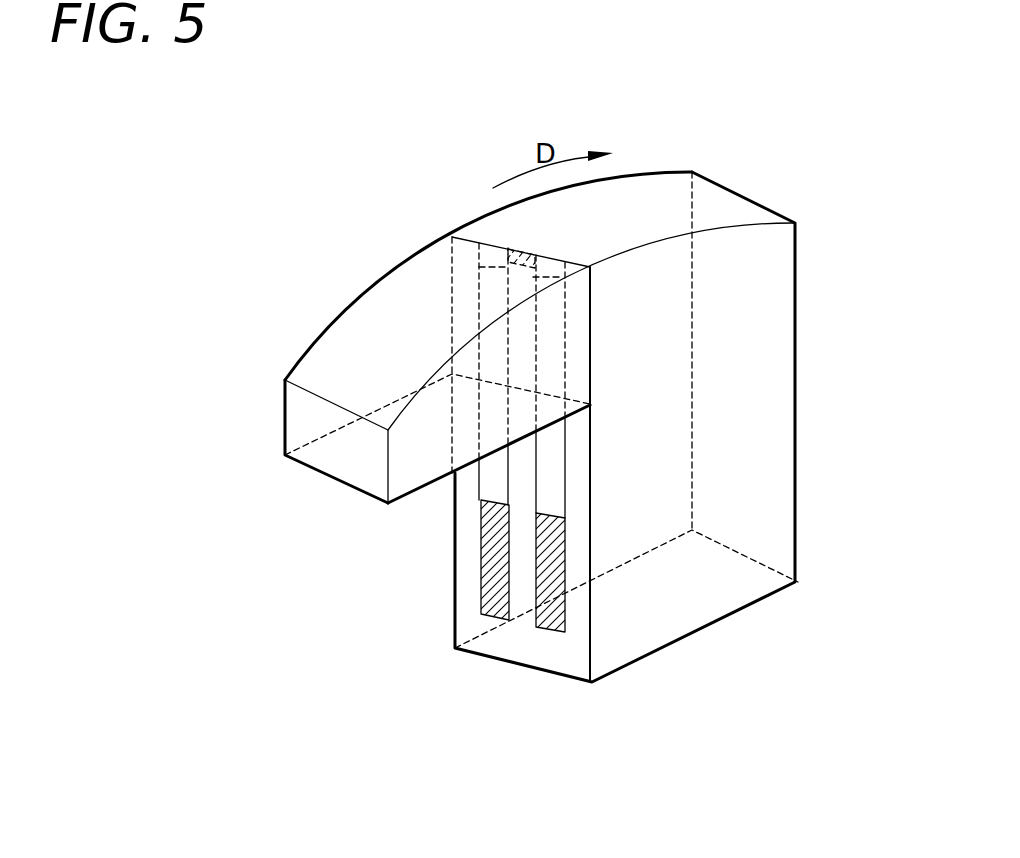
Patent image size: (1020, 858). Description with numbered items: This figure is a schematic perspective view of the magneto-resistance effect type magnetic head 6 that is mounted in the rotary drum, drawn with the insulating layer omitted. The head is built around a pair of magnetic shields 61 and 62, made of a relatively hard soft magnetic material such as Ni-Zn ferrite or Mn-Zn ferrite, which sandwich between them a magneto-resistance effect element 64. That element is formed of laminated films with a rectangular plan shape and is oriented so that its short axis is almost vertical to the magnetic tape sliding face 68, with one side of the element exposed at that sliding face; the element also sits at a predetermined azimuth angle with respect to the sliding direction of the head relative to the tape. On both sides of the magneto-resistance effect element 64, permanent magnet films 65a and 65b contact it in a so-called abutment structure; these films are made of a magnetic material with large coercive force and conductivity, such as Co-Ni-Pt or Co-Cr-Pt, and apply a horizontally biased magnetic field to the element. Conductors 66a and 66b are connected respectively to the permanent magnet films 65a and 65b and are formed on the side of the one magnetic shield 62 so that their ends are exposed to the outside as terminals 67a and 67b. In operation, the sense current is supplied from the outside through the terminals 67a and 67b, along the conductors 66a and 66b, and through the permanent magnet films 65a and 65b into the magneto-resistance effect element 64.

The magneto-resistance effect type magnetic head 6 is at (540, 427).
The magnetic tape sliding face 68 is at (345, 333).
The magnetic shield 61 is at (325, 462).
The magnetic shield 62 is at (688, 623).
The magneto-resistance effect element 64 is at (523, 253).
The permanent magnet film 65a is at (495, 253).
The permanent magnet film 65b is at (555, 267).
The conductor 66a is at (492, 471).
The conductor 66b is at (545, 485).
The terminal 67a is at (493, 610).
The terminal 67b is at (550, 630).